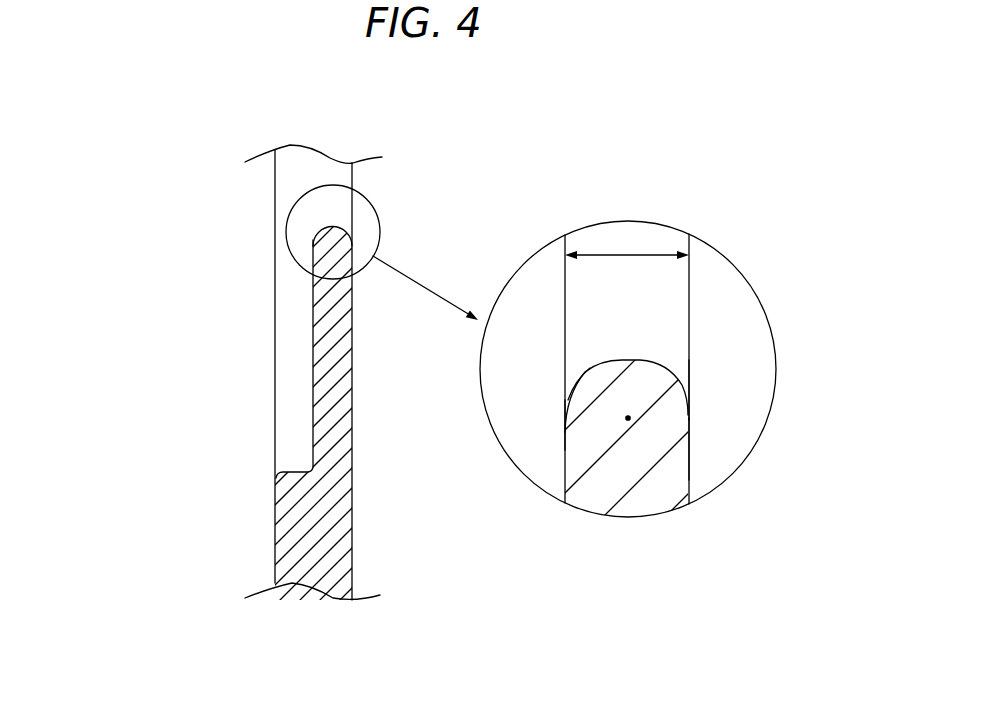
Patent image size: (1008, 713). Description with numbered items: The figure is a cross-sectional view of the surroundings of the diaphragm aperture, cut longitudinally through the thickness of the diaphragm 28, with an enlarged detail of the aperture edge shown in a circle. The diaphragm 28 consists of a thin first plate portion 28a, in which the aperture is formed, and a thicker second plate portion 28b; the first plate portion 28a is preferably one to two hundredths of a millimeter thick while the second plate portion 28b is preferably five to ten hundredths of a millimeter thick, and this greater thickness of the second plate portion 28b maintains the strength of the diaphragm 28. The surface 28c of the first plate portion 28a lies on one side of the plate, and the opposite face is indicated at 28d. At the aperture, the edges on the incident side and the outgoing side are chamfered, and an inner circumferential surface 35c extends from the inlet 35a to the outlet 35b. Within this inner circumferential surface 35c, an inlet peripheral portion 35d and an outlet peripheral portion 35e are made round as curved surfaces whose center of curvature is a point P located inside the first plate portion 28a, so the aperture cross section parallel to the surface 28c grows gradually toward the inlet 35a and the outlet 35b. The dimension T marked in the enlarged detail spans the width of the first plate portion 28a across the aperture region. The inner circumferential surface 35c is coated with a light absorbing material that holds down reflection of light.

The diaphragm 28 is at (370, 372).
The first plate portion 28a is at (322, 385).
The second plate portion 28b is at (337, 532).
The surface of the first plate portion 28c is at (313, 313).
The right side surface 28d is at (355, 352).
The inlet 35a is at (565, 415).
The outlet 35b is at (690, 418).
The inner circumferential surface 35c is at (343, 227).
The inlet peripheral portion 35d is at (580, 372).
The outlet peripheral portion 35e is at (691, 382).
The width of projection T is at (600, 253).
The point P is at (628, 418).